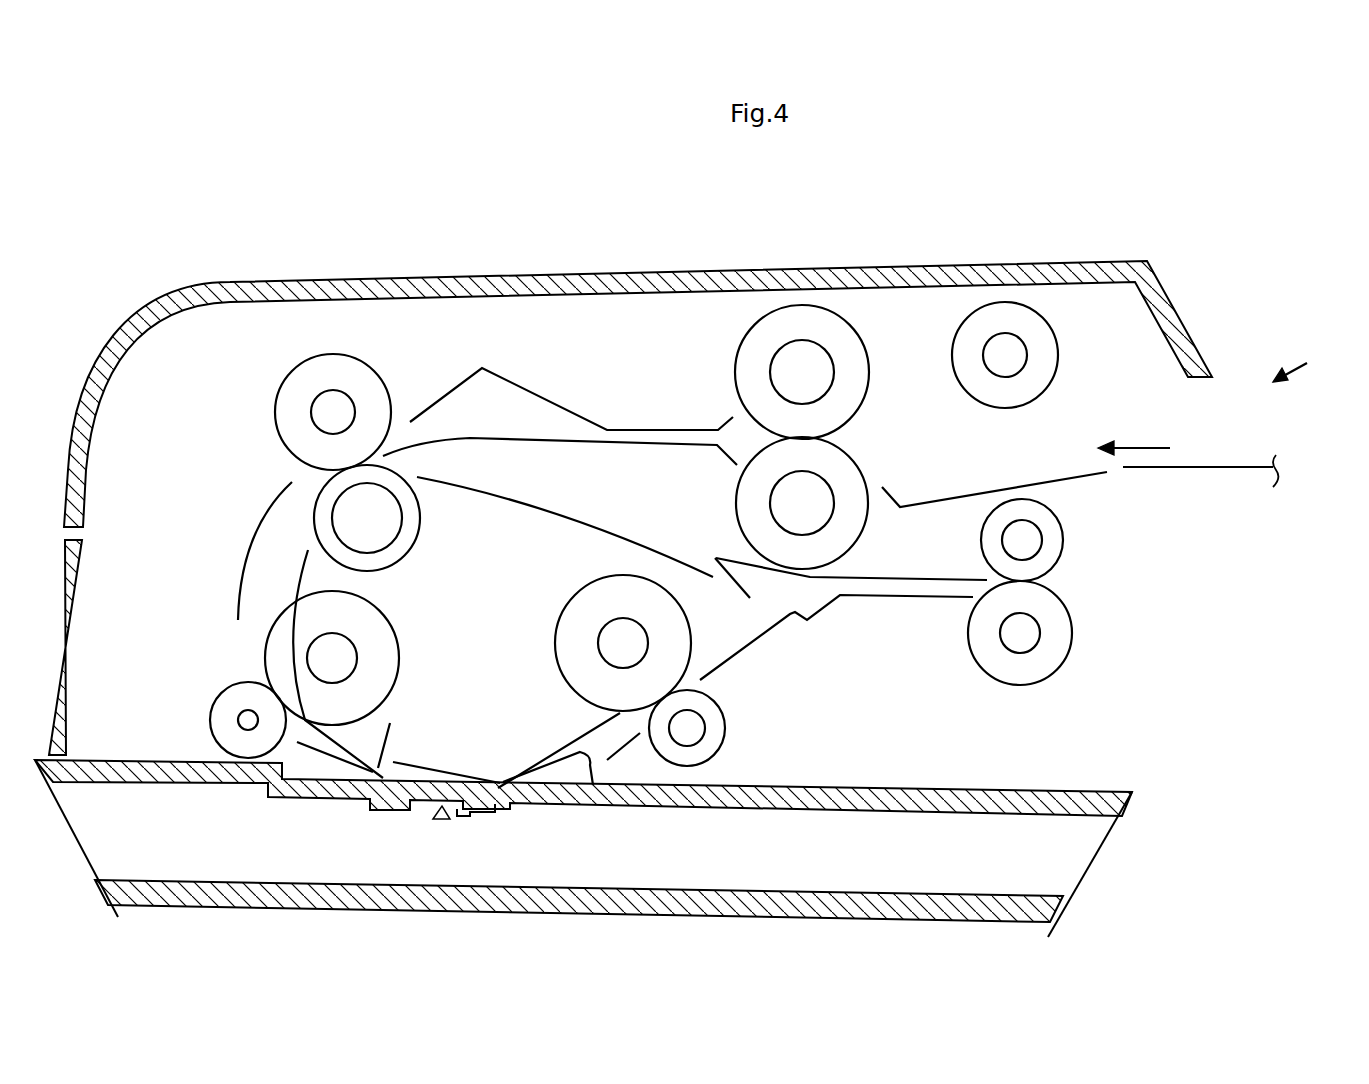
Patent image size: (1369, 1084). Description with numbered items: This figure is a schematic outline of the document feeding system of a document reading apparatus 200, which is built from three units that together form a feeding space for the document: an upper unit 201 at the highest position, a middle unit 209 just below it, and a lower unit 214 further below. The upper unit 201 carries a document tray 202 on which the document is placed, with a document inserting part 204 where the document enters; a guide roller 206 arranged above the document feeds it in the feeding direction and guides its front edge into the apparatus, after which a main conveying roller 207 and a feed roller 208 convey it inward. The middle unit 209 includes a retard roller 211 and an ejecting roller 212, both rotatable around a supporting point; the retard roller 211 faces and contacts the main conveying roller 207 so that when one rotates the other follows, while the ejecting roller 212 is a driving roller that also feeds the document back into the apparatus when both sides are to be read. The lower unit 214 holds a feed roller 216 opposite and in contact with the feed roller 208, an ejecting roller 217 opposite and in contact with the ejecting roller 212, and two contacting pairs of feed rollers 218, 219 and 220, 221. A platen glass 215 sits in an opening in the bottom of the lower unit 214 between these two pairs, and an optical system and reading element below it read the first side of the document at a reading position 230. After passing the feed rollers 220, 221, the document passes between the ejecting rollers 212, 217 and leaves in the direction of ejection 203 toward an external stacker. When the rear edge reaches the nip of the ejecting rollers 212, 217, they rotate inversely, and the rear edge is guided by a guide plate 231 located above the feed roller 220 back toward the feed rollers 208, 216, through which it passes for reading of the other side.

The document reading apparatus 200 is at (1210, 887).
The upper unit 201 is at (1000, 258).
The document tray 202 is at (1185, 463).
The direction of ejection 203 is at (1137, 443).
The document inserting part 204 is at (1320, 367).
The guide roller 206 is at (1058, 360).
The main conveying roller 207 is at (868, 340).
The feed roller 208 is at (355, 358).
The middle unit 209 is at (965, 490).
The retard roller 211 is at (868, 530).
The ejecting roller 212 is at (1065, 545).
The lower unit 214 is at (507, 742).
The platen glass 215 is at (465, 812).
The feed roller 216 is at (407, 560).
The ejecting roller 217 is at (1072, 645).
The feed roller 218 is at (398, 696).
The feed roller 219 is at (215, 697).
The feed roller 220 is at (580, 590).
The feed roller 221 is at (730, 704).
The reading position 230 is at (435, 818).
The guide plate 231 is at (593, 523).